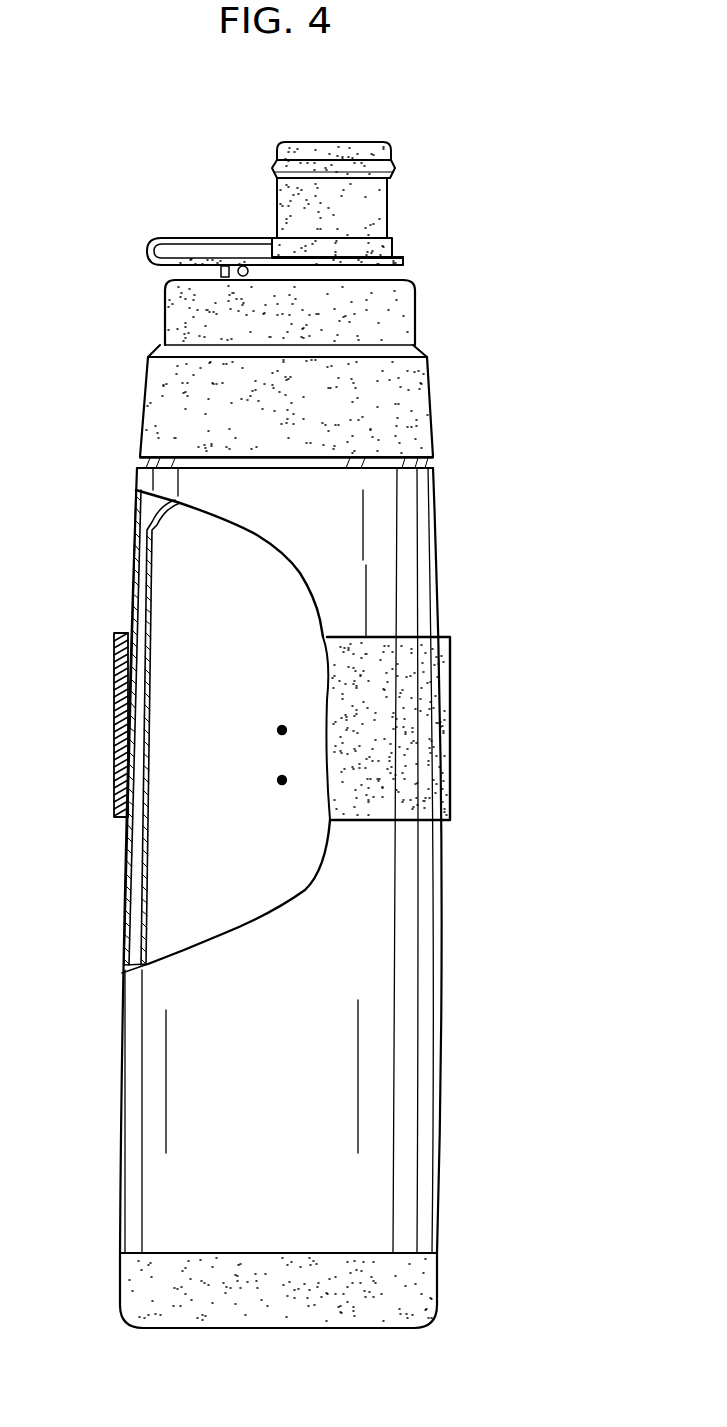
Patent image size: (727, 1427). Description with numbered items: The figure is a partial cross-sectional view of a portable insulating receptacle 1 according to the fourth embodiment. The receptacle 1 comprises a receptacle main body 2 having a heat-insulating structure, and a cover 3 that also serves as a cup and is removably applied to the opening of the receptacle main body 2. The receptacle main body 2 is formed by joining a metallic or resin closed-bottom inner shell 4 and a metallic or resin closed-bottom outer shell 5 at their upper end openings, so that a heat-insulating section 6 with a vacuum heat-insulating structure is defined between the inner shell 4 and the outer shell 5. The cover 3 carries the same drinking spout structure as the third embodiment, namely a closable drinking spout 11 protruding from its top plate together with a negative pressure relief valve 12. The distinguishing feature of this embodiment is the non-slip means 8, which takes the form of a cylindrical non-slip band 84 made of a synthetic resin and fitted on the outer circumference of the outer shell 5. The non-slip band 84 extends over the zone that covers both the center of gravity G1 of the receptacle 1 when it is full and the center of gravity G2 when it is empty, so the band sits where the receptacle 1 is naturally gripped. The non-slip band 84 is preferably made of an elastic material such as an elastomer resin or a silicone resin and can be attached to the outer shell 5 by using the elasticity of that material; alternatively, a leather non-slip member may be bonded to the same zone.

The insulating receptacle 1 is at (301, 104).
The receptacle main body 2 is at (449, 900).
The cover 3 is at (427, 376).
The inner shell 4 is at (153, 593).
The outer shell 5 is at (133, 563).
The heat-insulating section 6 is at (133, 877).
The non-slip means 8 is at (455, 752).
The drinking spout 11 is at (380, 147).
The negative pressure relief valve 12 is at (243, 267).
The non-slip band 84 is at (453, 700).
The center of gravity when full G1 is at (279, 781).
The center of gravity when empty G2 is at (279, 727).